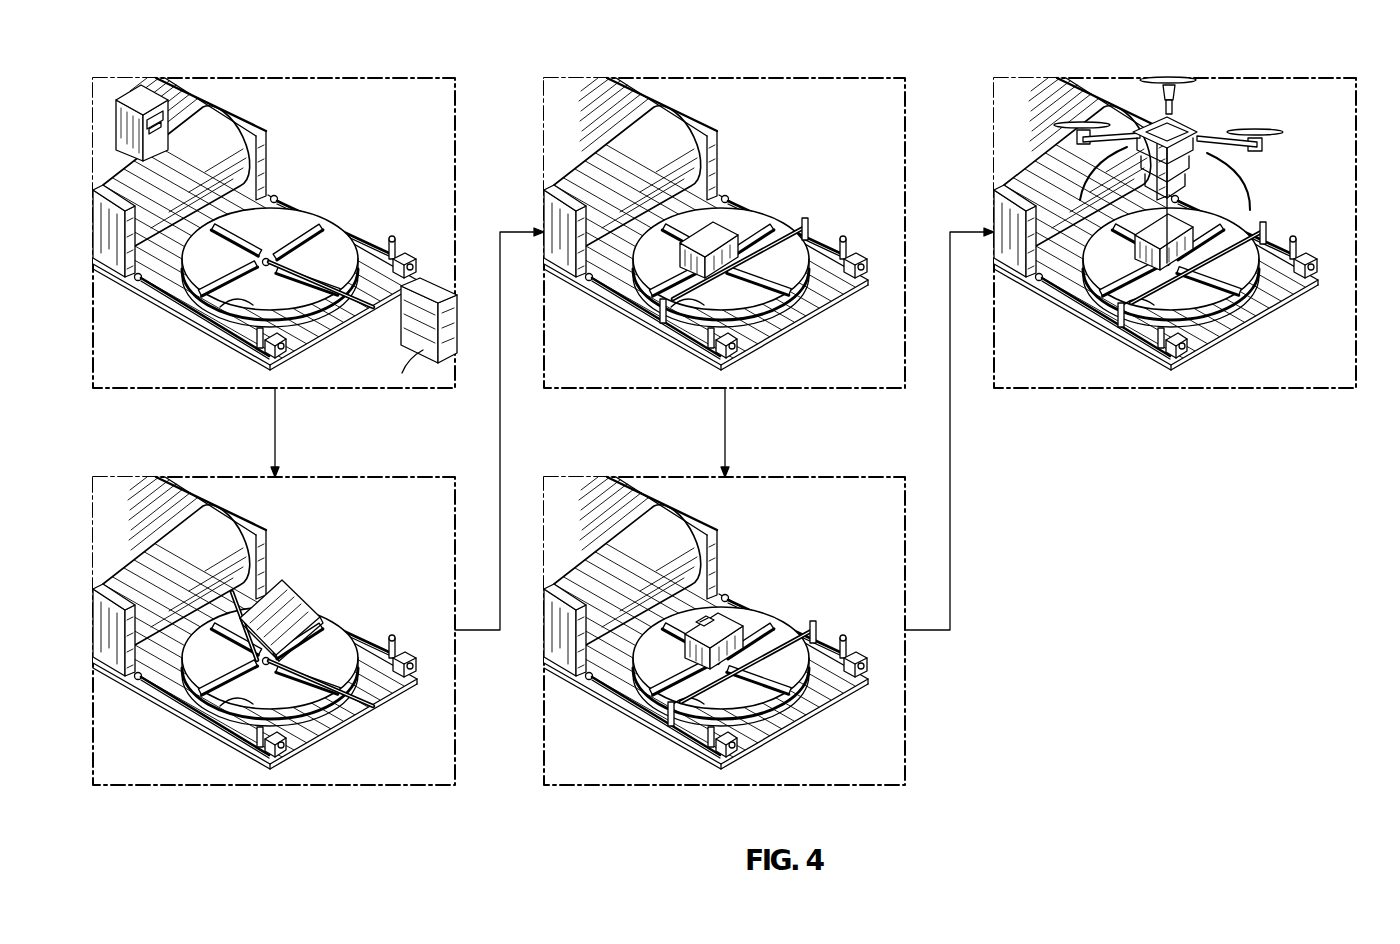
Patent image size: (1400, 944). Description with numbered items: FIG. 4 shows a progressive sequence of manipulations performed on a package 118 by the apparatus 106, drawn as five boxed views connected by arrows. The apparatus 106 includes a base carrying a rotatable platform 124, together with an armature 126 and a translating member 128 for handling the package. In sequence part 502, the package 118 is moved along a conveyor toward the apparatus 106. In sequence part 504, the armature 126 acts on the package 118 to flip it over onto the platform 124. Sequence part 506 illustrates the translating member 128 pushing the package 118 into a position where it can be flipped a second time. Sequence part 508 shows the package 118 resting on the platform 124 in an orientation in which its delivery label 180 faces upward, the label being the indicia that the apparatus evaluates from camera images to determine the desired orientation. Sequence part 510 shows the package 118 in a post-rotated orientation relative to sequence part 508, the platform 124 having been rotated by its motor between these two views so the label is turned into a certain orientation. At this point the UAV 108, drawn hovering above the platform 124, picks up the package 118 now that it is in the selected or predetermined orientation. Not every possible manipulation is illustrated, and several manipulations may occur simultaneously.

The apparatus 106 is at (362, 221).
The UAV 108 is at (1212, 122).
The package 118 is at (138, 93).
The platform 124 is at (203, 320).
The armature 126 is at (231, 592).
The translating member 128 is at (787, 233).
The delivery label 180 is at (693, 620).
The sequence part 502 is at (392, 50).
The sequence part 504 is at (127, 450).
The sequence part 506 is at (839, 51).
The sequence part 508 is at (614, 450).
The sequence part 510 is at (1309, 51).